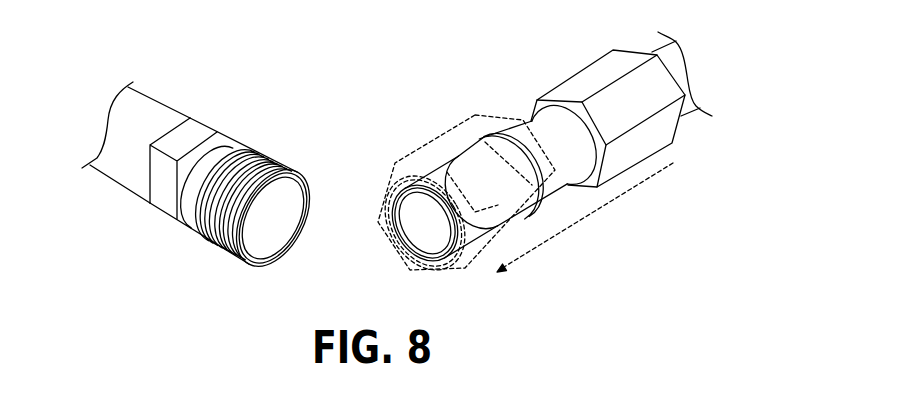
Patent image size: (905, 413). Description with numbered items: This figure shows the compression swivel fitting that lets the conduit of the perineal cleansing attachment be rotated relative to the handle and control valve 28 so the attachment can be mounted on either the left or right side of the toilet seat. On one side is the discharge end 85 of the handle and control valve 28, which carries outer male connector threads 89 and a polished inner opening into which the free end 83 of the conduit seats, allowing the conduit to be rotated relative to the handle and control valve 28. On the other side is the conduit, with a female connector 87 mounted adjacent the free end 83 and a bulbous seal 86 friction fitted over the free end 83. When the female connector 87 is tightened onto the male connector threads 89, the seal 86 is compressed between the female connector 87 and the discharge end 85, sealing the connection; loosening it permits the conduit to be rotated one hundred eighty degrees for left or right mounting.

The handle and control valve 28 is at (157, 117).
The outer male connector threads 89 is at (262, 154).
The discharge end 85 is at (252, 268).
The female connector 87 is at (583, 78).
The free end 83 is at (404, 250).
The bulbous seal 86 is at (512, 220).